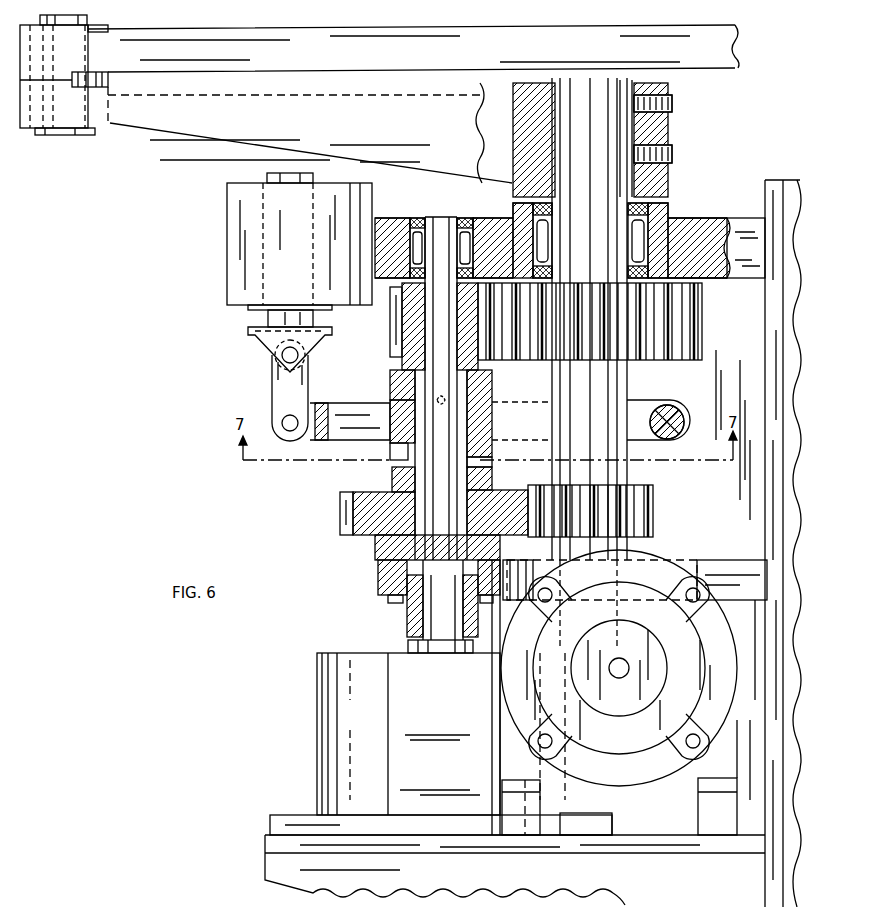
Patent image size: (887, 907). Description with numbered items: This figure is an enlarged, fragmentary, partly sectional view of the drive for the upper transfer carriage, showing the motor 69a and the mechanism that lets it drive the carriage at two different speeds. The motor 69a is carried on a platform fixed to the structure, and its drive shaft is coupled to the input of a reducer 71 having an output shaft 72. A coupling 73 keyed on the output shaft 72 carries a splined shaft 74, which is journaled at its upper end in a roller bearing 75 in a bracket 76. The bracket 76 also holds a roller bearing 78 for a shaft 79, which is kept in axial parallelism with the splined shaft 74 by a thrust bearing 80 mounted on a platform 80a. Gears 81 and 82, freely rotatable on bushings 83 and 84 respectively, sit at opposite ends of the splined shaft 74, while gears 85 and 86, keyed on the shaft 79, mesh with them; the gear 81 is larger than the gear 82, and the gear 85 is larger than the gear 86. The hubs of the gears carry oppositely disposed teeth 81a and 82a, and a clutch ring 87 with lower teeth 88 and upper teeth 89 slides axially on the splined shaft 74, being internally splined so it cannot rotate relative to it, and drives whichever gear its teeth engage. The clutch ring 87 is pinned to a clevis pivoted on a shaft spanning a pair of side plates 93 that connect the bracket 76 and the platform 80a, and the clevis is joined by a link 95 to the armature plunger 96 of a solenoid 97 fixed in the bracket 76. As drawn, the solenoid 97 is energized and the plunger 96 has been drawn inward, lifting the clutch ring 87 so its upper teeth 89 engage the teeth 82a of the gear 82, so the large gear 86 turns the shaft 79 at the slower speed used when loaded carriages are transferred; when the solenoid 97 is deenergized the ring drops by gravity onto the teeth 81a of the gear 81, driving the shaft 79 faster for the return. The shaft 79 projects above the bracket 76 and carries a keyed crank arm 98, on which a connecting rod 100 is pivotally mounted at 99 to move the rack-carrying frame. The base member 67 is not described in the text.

The connecting rod 100 is at (185, 30).
The pivot 99 is at (60, 133).
The crank arm 98 is at (310, 133).
The solenoid 97 is at (240, 237).
The armature plunger 96 is at (270, 315).
The link 95 is at (272, 383).
The side plates 93 is at (667, 408).
The upper teeth 89 is at (390, 375).
The lower teeth 88 is at (494, 457).
The clutch ring 87 is at (500, 435).
The gear 86 is at (695, 330).
The gear 85 is at (650, 520).
The bushing 84 is at (420, 317).
The bushing 83 is at (380, 548).
The gear 82 is at (393, 343).
The teeth 82a is at (493, 385).
The gear 81 is at (343, 505).
The teeth 81a is at (392, 467).
The thrust bearing 80 is at (690, 560).
The platform 80a is at (718, 560).
The shaft 79 is at (589, 364).
The roller bearing 78 is at (672, 203).
The bracket 76 is at (705, 217).
The roller bearing 75 is at (421, 218).
The splined shaft 74 is at (441, 428).
The coupling 73 is at (413, 605).
The output shaft 72 is at (412, 628).
The reducer 71 is at (408, 734).
The motor 69a is at (722, 640).
The base 67 is at (665, 845).